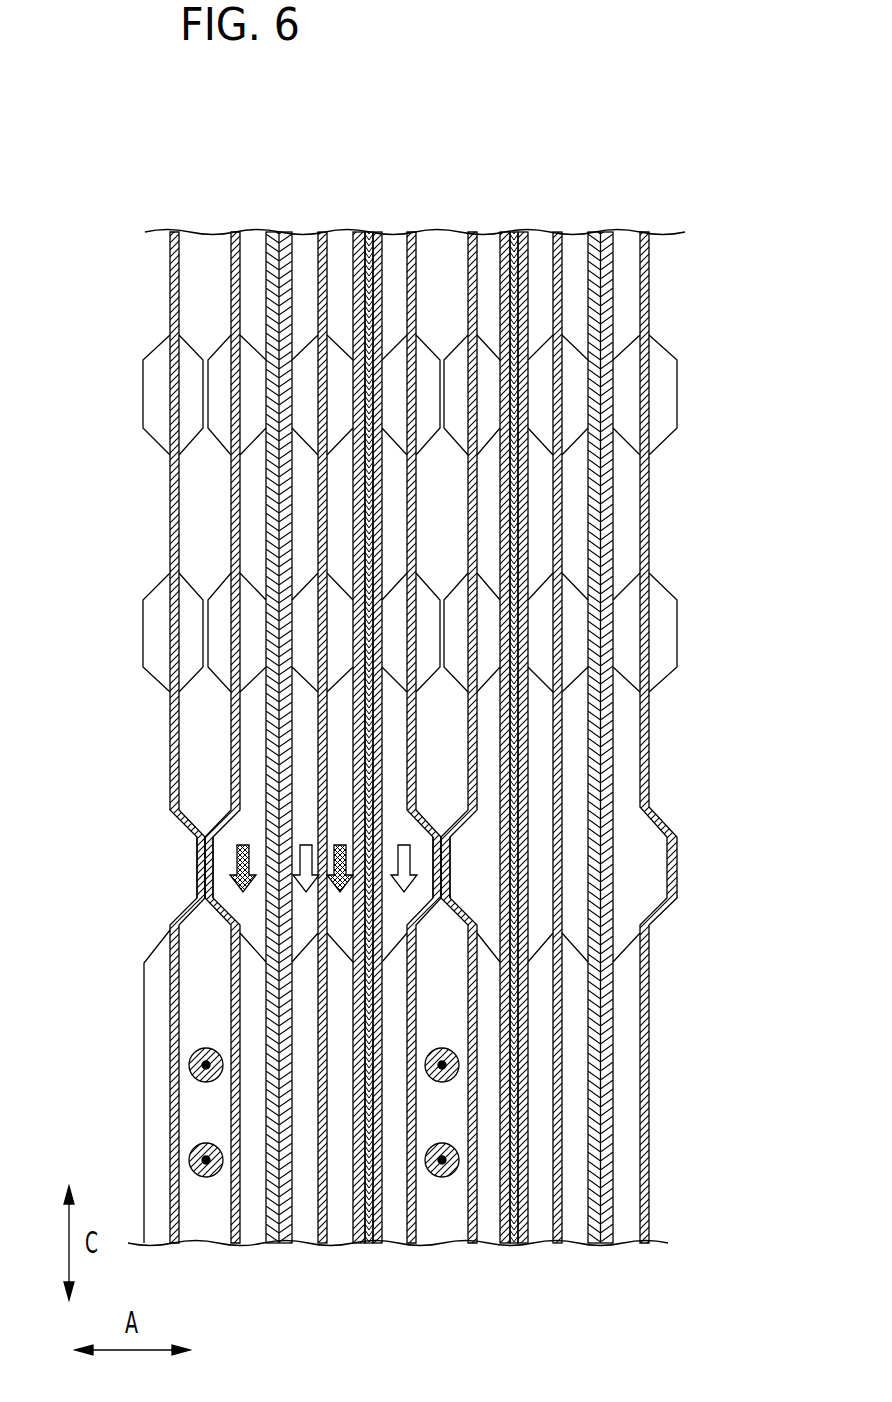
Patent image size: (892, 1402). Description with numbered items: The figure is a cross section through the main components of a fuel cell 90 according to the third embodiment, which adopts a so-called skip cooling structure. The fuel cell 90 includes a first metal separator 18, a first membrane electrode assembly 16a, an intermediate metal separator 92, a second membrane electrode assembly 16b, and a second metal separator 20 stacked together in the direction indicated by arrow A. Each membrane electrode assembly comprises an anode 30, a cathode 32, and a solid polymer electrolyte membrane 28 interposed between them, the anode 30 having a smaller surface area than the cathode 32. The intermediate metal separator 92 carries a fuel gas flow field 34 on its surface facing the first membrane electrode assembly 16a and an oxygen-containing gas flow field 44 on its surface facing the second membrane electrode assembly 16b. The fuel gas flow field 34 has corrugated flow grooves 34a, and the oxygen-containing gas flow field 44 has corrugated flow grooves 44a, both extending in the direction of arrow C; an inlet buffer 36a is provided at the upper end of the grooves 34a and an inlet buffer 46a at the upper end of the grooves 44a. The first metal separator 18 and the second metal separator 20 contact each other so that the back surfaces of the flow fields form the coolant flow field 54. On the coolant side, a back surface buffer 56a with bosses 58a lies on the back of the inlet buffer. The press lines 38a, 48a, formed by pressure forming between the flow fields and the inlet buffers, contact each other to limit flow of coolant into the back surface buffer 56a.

The fuel cell 90 is at (672, 155).
The first metal separator 18 is at (226, 266).
The second membrane electrode assembly 16b is at (278, 214).
The intermediate metal separator 92 is at (314, 265).
The first membrane electrode assembly 16a is at (366, 683).
The anode 30 is at (353, 270).
The solid polymer electrolyte membrane 28 is at (374, 248).
The cathode 32 is at (382, 270).
The second metal separator 20 is at (425, 269).
The back surface buffer 56a is at (437, 487).
The inlet buffer 36a is at (252, 527).
The inlet buffer 46a is at (305, 560).
The bosses 58a is at (194, 655).
The press line 38a is at (205, 862).
The press line 48a is at (441, 862).
The coolant flow field 54 is at (202, 995).
The corrugated flow grooves 34a is at (343, 1137).
The fuel gas flow field 34 is at (341, 1204).
The corrugated flow grooves 44a is at (400, 1132).
The oxygen-containing gas flow field 44 is at (399, 1199).